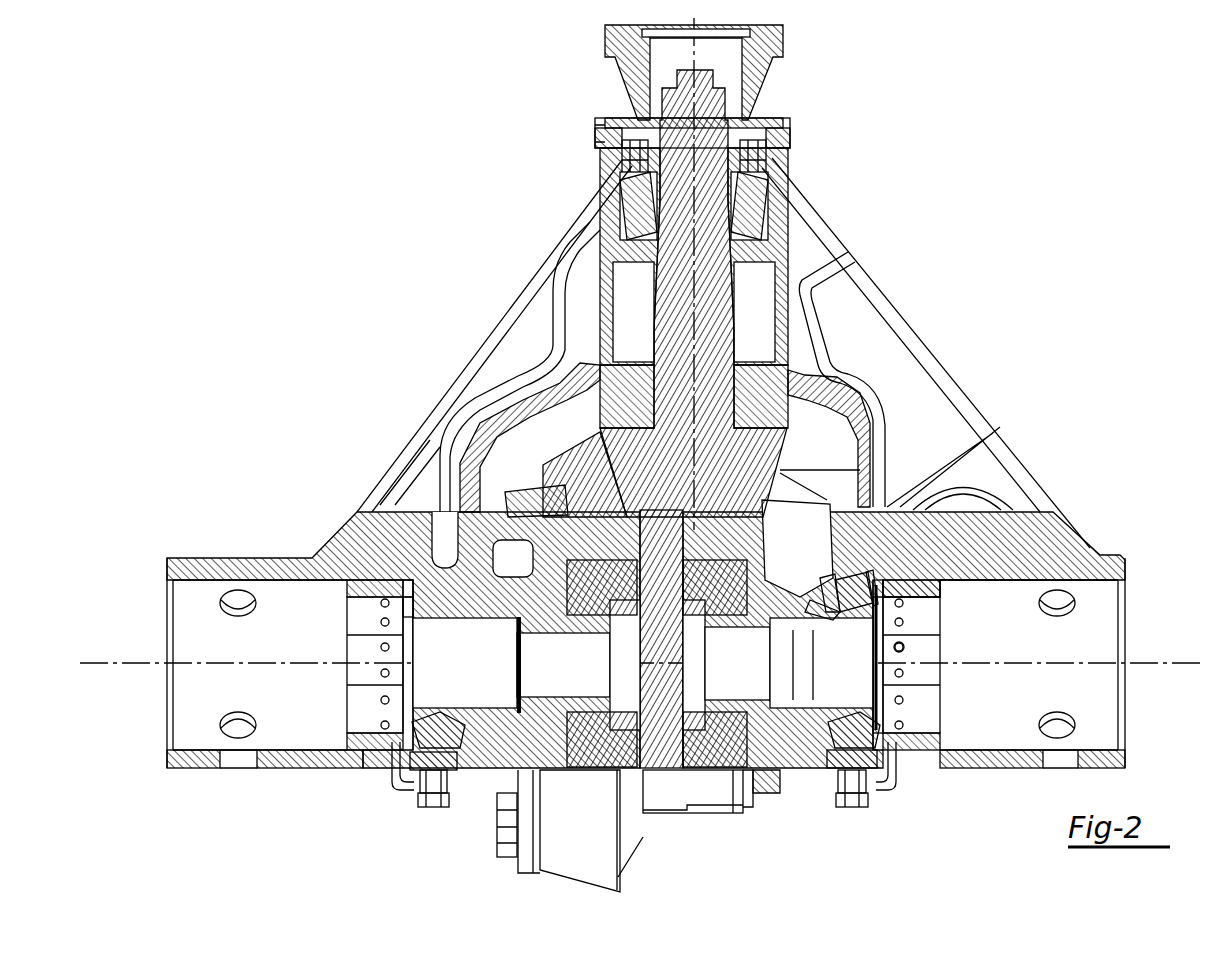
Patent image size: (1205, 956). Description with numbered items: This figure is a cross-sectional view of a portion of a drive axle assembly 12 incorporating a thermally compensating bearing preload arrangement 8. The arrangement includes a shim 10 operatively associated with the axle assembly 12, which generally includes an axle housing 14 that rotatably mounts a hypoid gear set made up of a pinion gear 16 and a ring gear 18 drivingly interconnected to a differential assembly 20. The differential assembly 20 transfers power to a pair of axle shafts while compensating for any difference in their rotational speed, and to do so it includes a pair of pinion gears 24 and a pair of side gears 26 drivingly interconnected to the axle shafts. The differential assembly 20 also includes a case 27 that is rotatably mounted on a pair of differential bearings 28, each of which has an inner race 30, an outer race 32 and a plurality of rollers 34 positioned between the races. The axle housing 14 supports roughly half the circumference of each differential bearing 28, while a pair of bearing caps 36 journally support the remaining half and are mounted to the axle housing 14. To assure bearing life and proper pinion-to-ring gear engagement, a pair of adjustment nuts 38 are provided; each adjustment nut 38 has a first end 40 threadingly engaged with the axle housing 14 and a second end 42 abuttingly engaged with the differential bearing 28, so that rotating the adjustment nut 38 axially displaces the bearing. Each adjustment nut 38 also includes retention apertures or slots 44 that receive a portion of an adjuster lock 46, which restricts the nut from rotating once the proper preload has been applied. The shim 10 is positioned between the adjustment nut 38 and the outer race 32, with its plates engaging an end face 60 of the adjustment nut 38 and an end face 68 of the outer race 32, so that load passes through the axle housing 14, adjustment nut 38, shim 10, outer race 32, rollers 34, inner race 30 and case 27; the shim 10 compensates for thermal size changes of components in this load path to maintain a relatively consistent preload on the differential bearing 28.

The thermally compensating bearing preload arrangement 8 is at (385, 795).
The shim 10 is at (407, 727).
The drive axle assembly 12 is at (985, 352).
The axle housing 14 is at (1083, 550).
The pinion gear 16 is at (785, 440).
The ring gear 18 is at (627, 860).
The differential assembly 20 is at (520, 892).
The pinion gears 24 is at (693, 765).
The side gears 26 is at (580, 742).
The case 27 is at (492, 735).
The differential bearings 28 is at (853, 570).
The inner race 30 is at (832, 600).
The outer race 32 is at (867, 580).
The rollers 34 is at (832, 587).
The bearing caps 36 is at (823, 760).
The adjustment nuts 38 is at (942, 572).
The first end 40 is at (942, 590).
The second end 42 is at (890, 580).
The retention apertures or slots 44 is at (902, 646).
The adjuster lock 46 is at (890, 790).
The end face 60 is at (410, 593).
The end face 68 is at (403, 598).